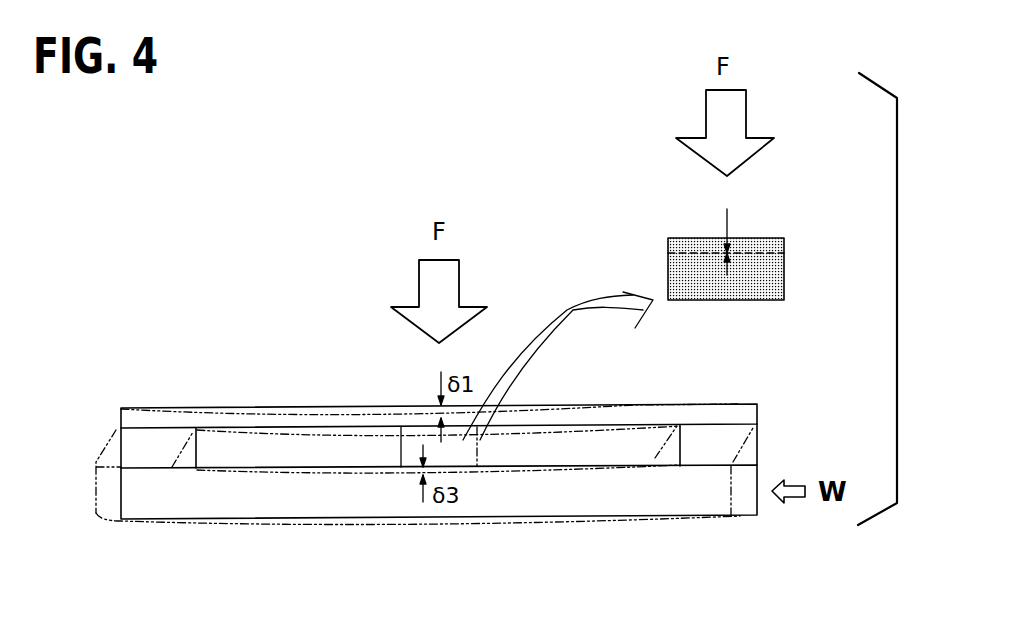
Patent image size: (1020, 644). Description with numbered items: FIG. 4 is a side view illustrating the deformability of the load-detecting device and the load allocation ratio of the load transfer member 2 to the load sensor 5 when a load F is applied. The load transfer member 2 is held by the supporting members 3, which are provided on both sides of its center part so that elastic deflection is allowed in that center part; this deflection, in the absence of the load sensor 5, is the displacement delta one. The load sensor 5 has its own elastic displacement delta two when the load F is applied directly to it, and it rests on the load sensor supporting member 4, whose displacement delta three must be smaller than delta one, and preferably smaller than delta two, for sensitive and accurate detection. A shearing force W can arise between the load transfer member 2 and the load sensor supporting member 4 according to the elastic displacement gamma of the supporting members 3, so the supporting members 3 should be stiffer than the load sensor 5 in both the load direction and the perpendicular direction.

The load transfer member 2 is at (643, 412).
The supporting members 3 is at (127, 447).
The load sensor supporting member 4 is at (645, 510).
The load sensor 5 is at (784, 268).